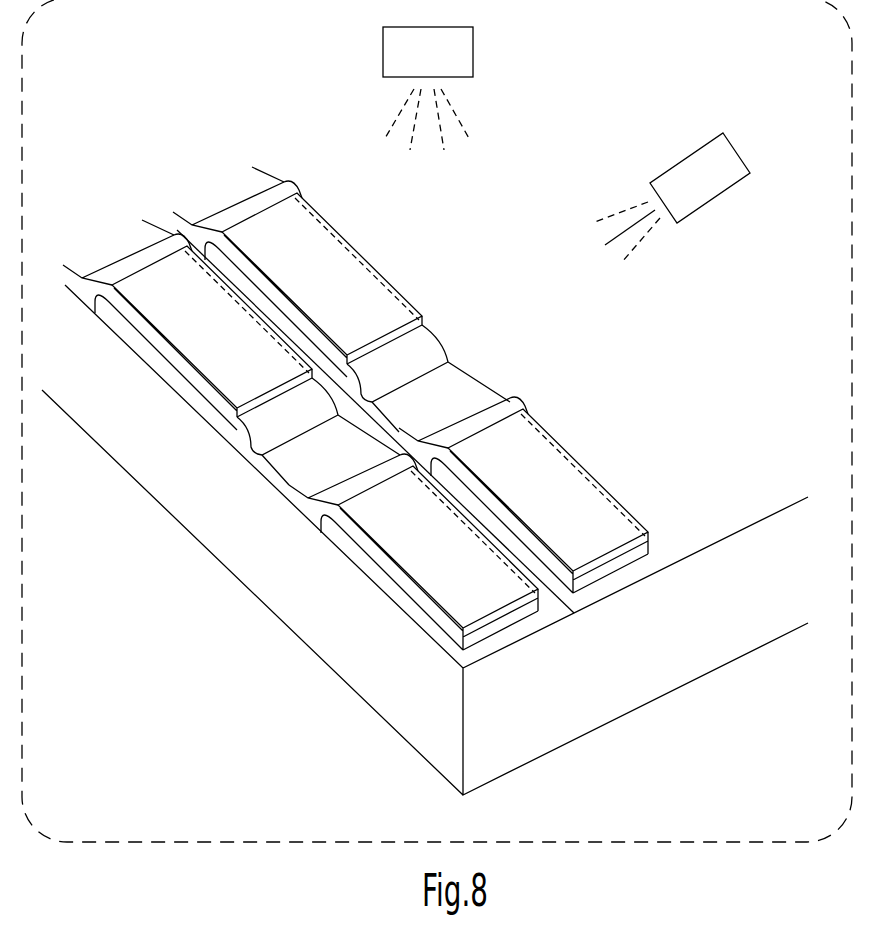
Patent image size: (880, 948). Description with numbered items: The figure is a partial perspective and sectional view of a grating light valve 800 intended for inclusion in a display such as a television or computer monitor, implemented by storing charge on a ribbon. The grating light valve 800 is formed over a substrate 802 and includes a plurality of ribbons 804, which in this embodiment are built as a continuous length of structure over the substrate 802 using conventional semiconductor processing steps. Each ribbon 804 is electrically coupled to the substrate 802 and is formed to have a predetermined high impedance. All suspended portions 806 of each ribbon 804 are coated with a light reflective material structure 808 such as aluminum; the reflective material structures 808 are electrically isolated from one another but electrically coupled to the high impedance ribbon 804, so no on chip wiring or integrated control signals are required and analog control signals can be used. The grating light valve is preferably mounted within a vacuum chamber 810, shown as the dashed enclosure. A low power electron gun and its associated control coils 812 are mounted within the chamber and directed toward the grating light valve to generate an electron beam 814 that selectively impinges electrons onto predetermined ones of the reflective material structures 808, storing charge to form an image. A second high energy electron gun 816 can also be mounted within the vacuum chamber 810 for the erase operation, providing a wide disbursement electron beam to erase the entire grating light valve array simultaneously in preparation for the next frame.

The grating light valve 800 is at (651, 712).
The substrate 802 is at (483, 754).
The ribbon 804 is at (373, 434).
The suspended portion 806 is at (404, 390).
The light reflective material structure 808 is at (295, 337).
The vacuum chamber 810 is at (219, 842).
The electron gun 812 is at (684, 191).
The electron beam 814 is at (647, 243).
The second high energy electron gun 816 is at (414, 66).